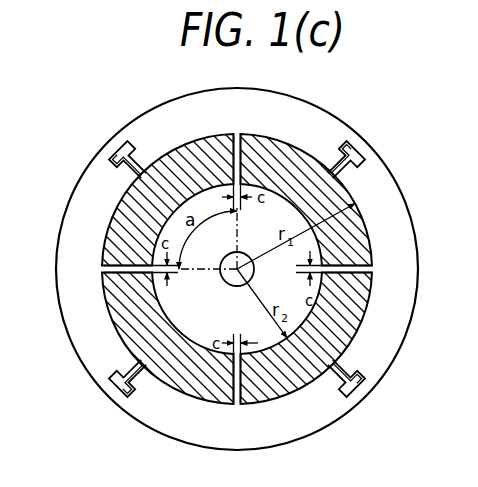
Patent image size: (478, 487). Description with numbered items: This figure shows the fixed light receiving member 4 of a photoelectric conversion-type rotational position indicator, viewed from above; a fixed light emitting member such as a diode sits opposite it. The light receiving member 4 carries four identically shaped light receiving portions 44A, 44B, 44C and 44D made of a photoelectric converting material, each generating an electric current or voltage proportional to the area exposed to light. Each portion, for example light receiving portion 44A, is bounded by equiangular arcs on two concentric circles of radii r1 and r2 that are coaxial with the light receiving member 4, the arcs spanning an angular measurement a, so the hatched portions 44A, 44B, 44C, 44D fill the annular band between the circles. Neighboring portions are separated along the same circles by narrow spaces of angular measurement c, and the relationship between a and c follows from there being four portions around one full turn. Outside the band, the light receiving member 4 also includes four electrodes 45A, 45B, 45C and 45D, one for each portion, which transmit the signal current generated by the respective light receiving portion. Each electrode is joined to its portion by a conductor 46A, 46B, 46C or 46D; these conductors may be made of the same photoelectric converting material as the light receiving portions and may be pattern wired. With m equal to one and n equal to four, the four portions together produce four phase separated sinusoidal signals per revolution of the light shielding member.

The light receiving member 4 is at (98, 193).
The light receiving portion 44A is at (239, 248).
The light receiving portion 44B is at (51, 109).
The light receiving portion 44C is at (239, 269).
The light receiving portion 44D is at (239, 245).
The electrode 45A is at (365, 135).
The electrode 45B is at (375, 388).
The electrode 45C is at (97, 386).
The electrode 45D is at (122, 121).
The conductor 46A is at (376, 159).
The conductor 46B is at (374, 375).
The conductor 46C is at (140, 410).
The conductor 46D is at (96, 155).